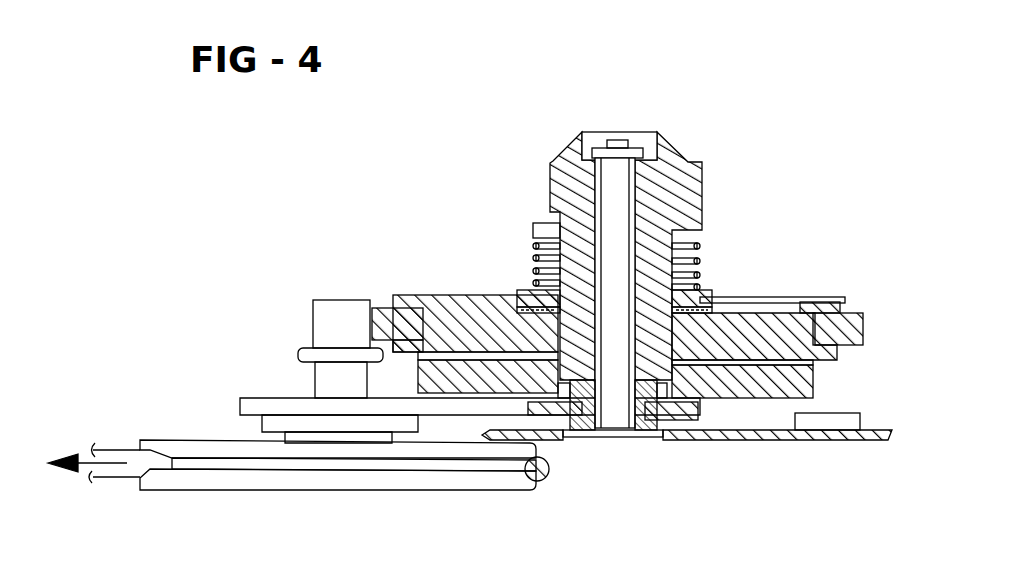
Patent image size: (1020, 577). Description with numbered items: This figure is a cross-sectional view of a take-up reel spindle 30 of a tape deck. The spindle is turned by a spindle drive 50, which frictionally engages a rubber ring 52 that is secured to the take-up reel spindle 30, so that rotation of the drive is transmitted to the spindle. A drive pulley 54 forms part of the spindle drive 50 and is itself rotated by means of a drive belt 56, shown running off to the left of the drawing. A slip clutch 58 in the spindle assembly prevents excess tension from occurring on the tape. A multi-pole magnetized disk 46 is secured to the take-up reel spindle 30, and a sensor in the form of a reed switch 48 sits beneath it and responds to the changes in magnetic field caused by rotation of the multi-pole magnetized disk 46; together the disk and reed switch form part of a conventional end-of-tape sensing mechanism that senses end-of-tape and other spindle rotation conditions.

The take-up reel spindle 30 is at (673, 147).
The multi-pole magnetized disk 46 is at (813, 383).
The reed switch 48 is at (815, 425).
The spindle drive 50 is at (332, 310).
The rubber ring 52 is at (381, 316).
The drive pulley 54 is at (440, 483).
The drive belt 56 is at (137, 472).
The slip clutch 58 is at (813, 366).